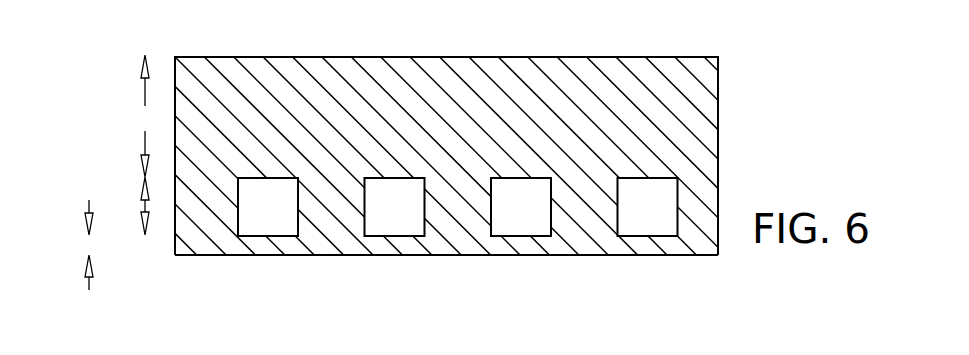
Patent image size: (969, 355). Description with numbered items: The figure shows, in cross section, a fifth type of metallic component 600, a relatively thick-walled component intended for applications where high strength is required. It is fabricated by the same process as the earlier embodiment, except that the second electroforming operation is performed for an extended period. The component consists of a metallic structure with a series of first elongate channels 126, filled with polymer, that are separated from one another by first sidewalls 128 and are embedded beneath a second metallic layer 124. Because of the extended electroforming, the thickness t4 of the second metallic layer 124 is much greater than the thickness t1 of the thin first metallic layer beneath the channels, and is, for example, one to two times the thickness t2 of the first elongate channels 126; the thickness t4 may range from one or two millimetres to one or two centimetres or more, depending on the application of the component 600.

The second metallic layer 124 is at (530, 78).
The first elongate channels 126 is at (525, 238).
The first sidewalls 128 is at (387, 247).
The fifth type of metallic component 600 is at (484, 177).
The thickness of the first metallic layer t1 is at (88, 246).
The thickness of the first elongate channels t2 is at (140, 207).
The thickness of the second metallic layer t4 is at (146, 116).